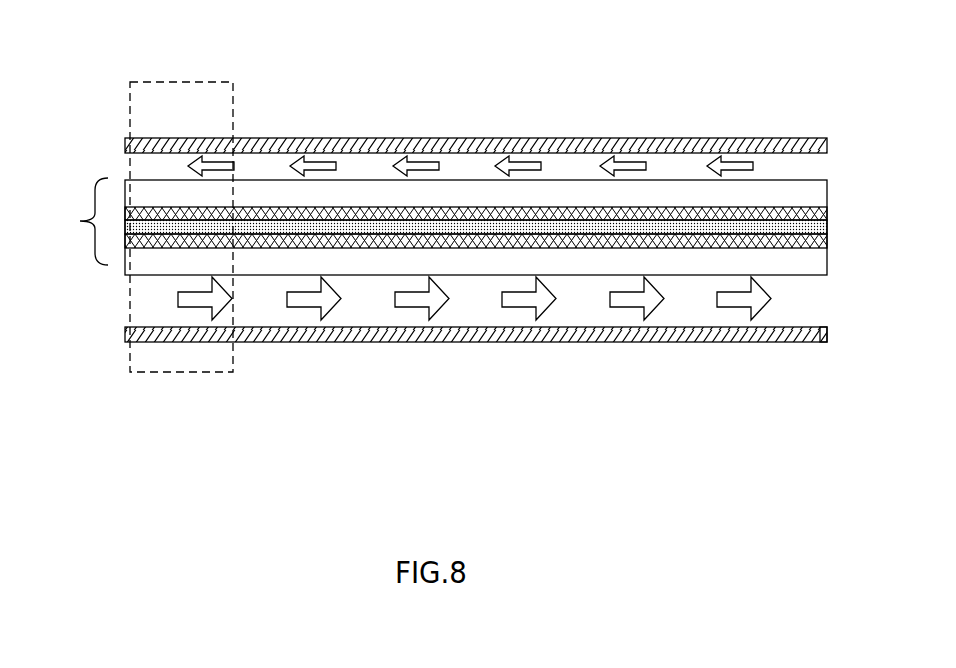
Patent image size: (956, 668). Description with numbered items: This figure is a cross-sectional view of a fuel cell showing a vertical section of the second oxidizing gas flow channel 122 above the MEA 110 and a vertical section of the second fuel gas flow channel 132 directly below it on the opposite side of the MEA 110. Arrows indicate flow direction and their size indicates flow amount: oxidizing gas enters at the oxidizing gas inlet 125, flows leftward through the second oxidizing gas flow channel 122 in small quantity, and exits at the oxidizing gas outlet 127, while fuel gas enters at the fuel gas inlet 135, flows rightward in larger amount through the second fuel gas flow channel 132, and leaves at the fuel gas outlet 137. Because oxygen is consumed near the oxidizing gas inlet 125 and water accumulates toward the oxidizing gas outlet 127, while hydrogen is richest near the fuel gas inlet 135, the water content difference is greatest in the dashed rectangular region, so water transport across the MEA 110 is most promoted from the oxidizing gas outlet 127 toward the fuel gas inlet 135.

The MEA 110 is at (433, 226).
The second oxidizing gas flow channel 122 is at (578, 168).
The oxidizing gas inlet 125 is at (803, 170).
The oxidizing gas outlet 127 is at (140, 163).
The second fuel gas flow channel 132 is at (583, 310).
The fuel gas inlet 135 is at (150, 295).
The fuel gas outlet 137 is at (806, 295).